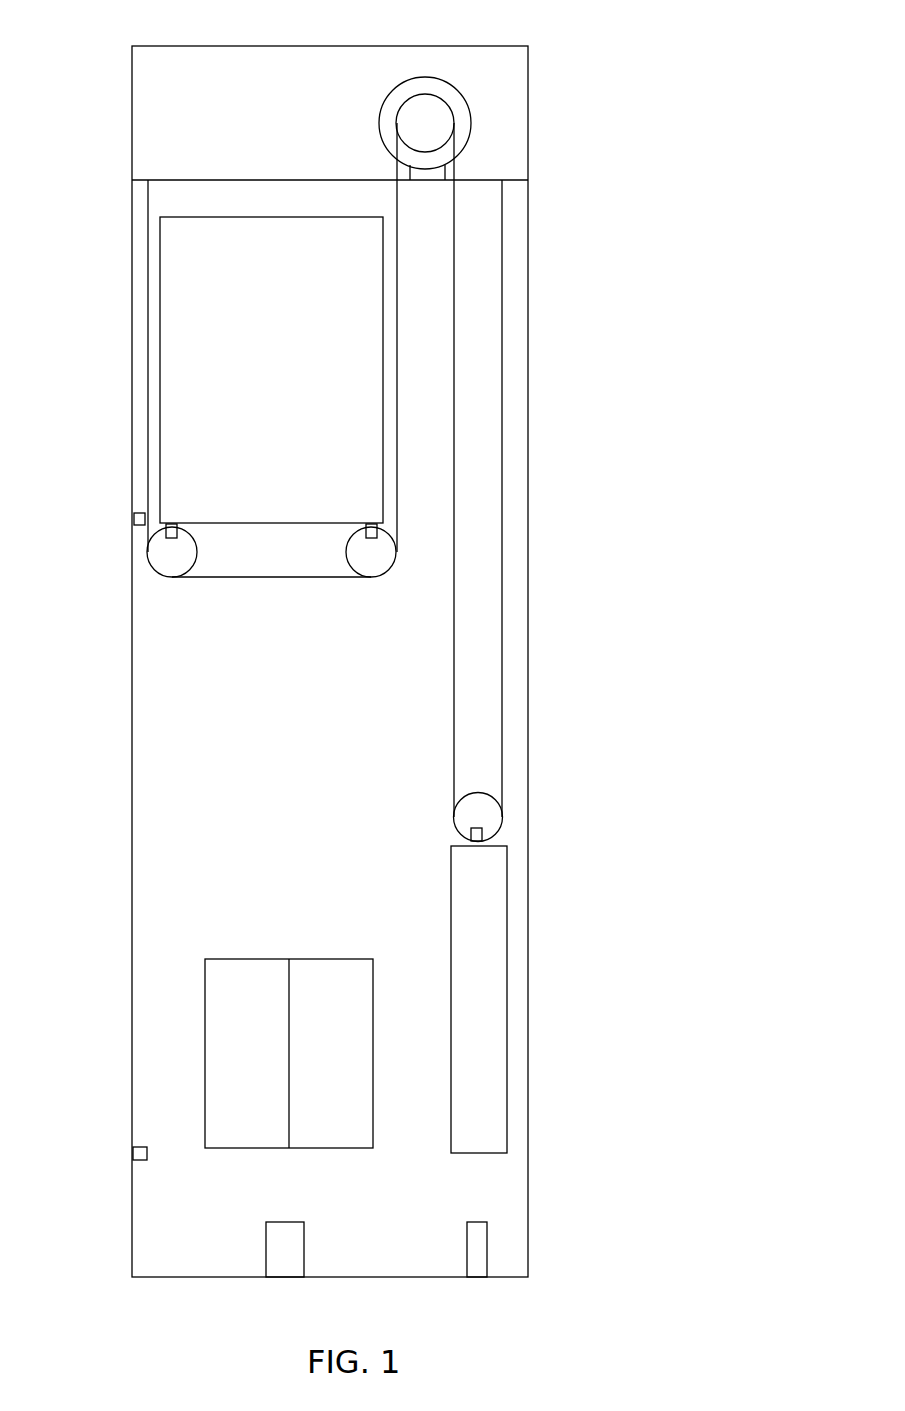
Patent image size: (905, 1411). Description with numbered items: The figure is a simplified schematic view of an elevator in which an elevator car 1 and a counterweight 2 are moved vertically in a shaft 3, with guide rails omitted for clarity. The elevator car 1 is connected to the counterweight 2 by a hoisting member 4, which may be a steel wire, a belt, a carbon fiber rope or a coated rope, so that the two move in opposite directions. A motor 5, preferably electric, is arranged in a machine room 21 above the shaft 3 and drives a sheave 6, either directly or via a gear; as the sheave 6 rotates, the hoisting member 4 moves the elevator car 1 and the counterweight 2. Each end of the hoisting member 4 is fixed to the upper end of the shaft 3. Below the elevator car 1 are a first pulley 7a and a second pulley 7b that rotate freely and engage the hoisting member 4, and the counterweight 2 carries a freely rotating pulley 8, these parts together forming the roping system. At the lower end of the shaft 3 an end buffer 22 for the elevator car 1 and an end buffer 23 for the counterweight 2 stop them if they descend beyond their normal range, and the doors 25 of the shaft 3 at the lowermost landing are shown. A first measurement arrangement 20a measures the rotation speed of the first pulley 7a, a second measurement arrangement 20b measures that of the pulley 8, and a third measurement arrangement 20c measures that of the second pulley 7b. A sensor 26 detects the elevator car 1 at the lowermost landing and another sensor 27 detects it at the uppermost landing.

The elevator car 1 is at (161, 388).
The counterweight 2 is at (507, 908).
The shaft 3 is at (528, 516).
The hoisting member 4 is at (500, 389).
The motor 5 is at (470, 126).
The sheave 6 is at (413, 120).
The first pulley 7a is at (367, 563).
The second pulley 7b is at (175, 563).
The pulley 8 is at (481, 812).
The first measurement arrangement 20a is at (379, 530).
The second measurement arrangement 20b is at (470, 836).
The third measurement arrangement 20c is at (179, 529).
The machine room 21 is at (234, 147).
The end buffer 22 is at (278, 1221).
The end buffer 23 is at (475, 1221).
The doors 25 is at (266, 1071).
The sensor 26 is at (143, 1146).
The sensor 27 is at (139, 525).